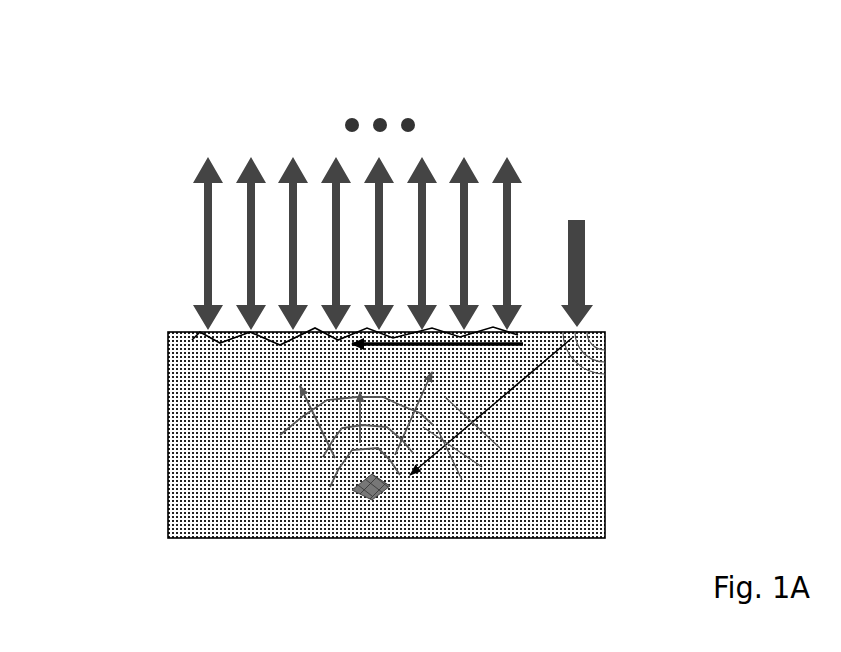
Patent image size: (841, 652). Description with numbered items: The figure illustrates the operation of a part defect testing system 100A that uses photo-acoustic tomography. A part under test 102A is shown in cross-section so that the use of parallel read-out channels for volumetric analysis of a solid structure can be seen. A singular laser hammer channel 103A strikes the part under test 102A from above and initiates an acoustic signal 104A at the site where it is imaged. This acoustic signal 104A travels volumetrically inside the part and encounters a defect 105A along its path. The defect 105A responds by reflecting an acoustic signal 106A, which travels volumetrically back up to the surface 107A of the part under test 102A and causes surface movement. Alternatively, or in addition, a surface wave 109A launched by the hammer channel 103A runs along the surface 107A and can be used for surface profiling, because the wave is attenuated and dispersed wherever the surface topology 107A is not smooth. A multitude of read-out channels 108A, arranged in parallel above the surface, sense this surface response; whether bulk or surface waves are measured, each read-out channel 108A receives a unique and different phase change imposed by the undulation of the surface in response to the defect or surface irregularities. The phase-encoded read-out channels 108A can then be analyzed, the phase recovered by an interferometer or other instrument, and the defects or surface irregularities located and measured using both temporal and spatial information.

The part defect testing system 100A is at (666, 77).
The part under test 102A is at (158, 398).
The laser hammer channel 103A is at (589, 263).
The acoustic signal 104A is at (595, 366).
The defect 105A is at (354, 509).
The reflected acoustic signal 106A is at (308, 467).
The surface 107A is at (188, 318).
The read-out channels 108A is at (212, 138).
The surface wave 109A is at (450, 348).